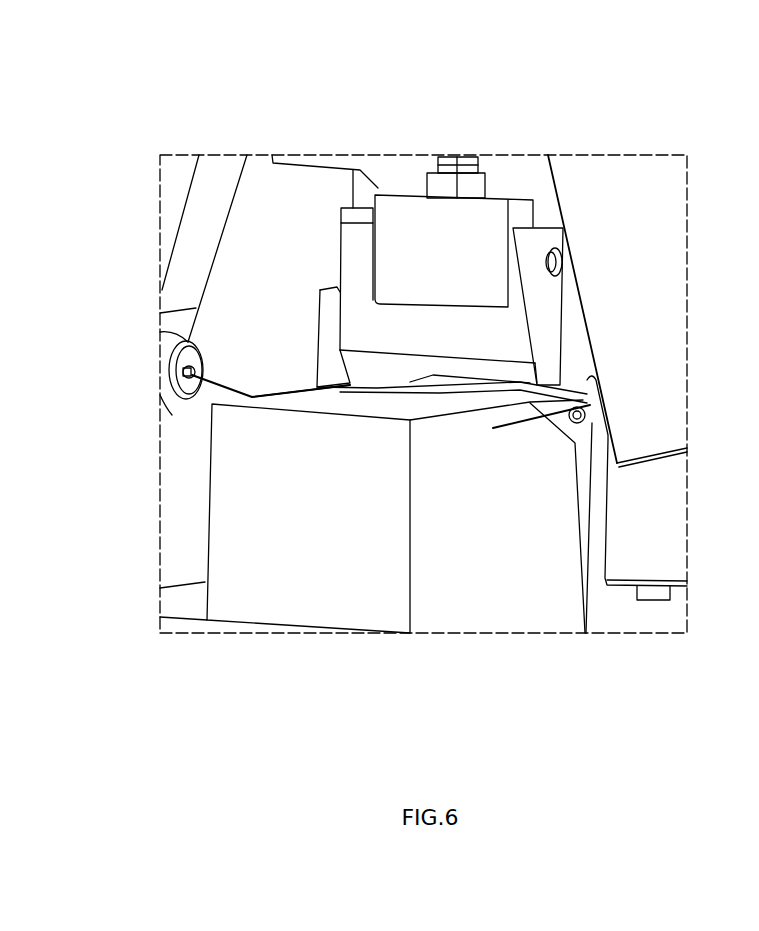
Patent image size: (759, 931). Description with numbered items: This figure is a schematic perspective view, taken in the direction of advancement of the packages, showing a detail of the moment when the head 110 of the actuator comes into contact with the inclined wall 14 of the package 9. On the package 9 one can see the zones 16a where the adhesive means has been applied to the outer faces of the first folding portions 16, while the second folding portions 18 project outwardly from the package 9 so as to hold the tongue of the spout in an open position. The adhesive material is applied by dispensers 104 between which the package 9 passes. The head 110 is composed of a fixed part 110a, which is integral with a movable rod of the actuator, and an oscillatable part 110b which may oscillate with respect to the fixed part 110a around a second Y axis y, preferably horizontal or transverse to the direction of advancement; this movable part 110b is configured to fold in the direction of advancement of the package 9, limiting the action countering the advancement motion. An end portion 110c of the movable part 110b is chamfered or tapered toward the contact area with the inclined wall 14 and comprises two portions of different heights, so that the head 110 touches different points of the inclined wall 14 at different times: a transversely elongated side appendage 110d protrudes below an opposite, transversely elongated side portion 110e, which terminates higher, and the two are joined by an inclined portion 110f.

The package 9 is at (547, 570).
The inclined wall 14 is at (447, 396).
The first folding portions 16 is at (587, 394).
The zones 16a is at (592, 424).
The second folding portions 18 is at (593, 481).
The dispensers 104 is at (210, 182).
The head 110 is at (388, 184).
The fixed part 110a is at (488, 233).
The oscillatable part 110b is at (357, 330).
The end portion 110c is at (507, 373).
The side appendage 110d is at (373, 382).
The side portion 110e is at (482, 405).
The inclined portion 110f is at (413, 386).
The second Y axis y is at (557, 263).